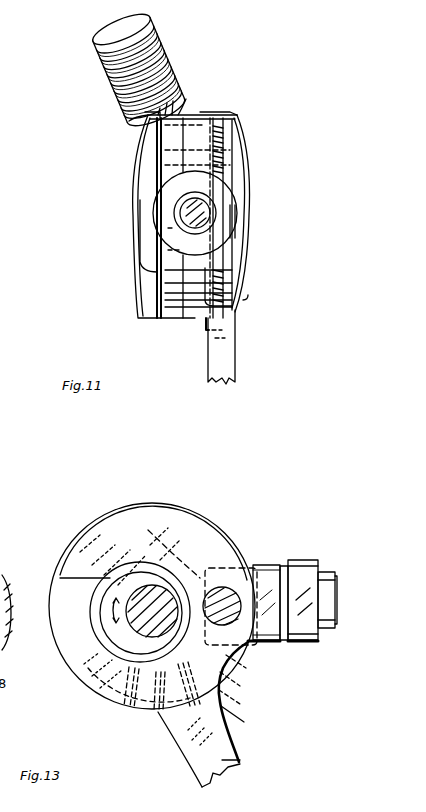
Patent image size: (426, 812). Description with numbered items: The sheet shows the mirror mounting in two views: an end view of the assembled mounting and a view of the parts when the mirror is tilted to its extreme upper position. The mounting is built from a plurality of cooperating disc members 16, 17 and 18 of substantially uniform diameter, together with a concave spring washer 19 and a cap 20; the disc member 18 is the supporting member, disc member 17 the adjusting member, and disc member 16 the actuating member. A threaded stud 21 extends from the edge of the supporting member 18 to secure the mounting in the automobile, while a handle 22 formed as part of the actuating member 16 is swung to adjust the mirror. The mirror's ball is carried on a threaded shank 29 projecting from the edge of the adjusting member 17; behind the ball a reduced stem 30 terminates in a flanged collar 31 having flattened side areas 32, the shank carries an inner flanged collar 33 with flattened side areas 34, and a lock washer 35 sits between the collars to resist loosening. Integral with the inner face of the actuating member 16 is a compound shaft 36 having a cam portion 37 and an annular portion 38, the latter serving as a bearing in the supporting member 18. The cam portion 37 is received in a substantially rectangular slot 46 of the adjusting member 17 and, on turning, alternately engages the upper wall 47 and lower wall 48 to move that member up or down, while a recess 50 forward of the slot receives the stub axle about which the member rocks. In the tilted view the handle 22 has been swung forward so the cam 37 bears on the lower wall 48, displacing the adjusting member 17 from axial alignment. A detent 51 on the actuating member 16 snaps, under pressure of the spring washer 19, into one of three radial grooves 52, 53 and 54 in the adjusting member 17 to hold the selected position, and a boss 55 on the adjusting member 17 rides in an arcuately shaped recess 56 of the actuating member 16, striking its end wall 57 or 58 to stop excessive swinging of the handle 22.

In FIG. 11, the disc member 16 is at (240, 133).
In FIG. 13, the disc member 16 is at (212, 759).
In FIG. 11, the disc member 17 is at (196, 136).
In FIG. 13, the disc member 17 is at (98, 532).
In FIG. 11, the disc member 18 is at (176, 134).
In FIG. 11, the spring washer 19 is at (157, 256).
In FIG. 11, the cap 20 is at (140, 170).
In FIG. 11, the threaded stud 21 is at (160, 55).
In FIG. 11, the handle 22 is at (222, 352).
In FIG. 13, the handle 22 is at (242, 760).
In FIG. 11, the threaded shank 29 is at (207, 212).
In FIG. 13, the reduced stem 30 is at (333, 628).
In FIG. 13, the flanged collar 31 is at (324, 630).
In FIG. 13, the flattened side areas 32 is at (300, 590).
In FIG. 11, the flanged collar 33 is at (226, 192).
In FIG. 13, the flanged collar 33 is at (262, 643).
In FIG. 11, the flattened side areas 34 is at (157, 216).
In FIG. 13, the flattened side areas 34 is at (268, 590).
In FIG. 13, the lock washer 35 is at (284, 640).
In FIG. 13, the compound shaft 36 is at (136, 621).
In FIG. 13, the cam portion 37 is at (113, 596).
In FIG. 13, the annular portion 38 is at (140, 618).
In FIG. 13, the rectangular slot 46 is at (93, 630).
In FIG. 13, the upper wall 47 is at (127, 572).
In FIG. 13, the lower wall 48 is at (94, 679).
In FIG. 13, the recess 50 is at (232, 593).
In FIG. 11, the detent 51 is at (205, 328).
In FIG. 13, the detent 51 is at (234, 722).
In FIG. 13, the groove 52 is at (128, 707).
In FIG. 13, the groove 53 is at (157, 712).
In FIG. 11, the groove 54 is at (236, 302).
In FIG. 13, the groove 54 is at (231, 700).
In FIG. 13, the boss 55 is at (234, 658).
In FIG. 11, the arcuately shaped recess 56 is at (222, 156).
In FIG. 13, the arcuately shaped recess 56 is at (182, 520).
In FIG. 11, the end wall 57 is at (226, 118).
In FIG. 13, the end wall 57 is at (165, 513).
In FIG. 11, the end wall 58 is at (214, 296).
In FIG. 13, the end wall 58 is at (232, 680).